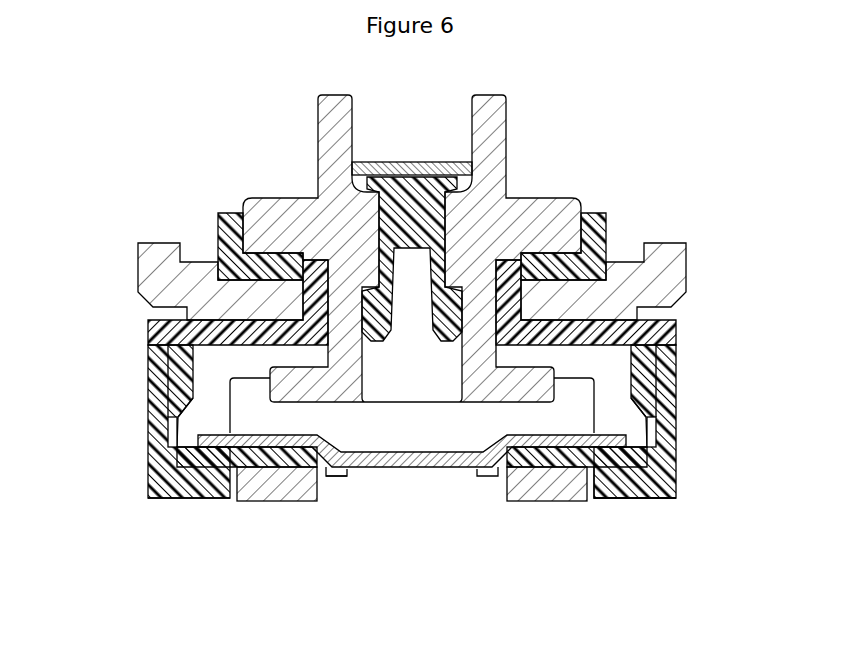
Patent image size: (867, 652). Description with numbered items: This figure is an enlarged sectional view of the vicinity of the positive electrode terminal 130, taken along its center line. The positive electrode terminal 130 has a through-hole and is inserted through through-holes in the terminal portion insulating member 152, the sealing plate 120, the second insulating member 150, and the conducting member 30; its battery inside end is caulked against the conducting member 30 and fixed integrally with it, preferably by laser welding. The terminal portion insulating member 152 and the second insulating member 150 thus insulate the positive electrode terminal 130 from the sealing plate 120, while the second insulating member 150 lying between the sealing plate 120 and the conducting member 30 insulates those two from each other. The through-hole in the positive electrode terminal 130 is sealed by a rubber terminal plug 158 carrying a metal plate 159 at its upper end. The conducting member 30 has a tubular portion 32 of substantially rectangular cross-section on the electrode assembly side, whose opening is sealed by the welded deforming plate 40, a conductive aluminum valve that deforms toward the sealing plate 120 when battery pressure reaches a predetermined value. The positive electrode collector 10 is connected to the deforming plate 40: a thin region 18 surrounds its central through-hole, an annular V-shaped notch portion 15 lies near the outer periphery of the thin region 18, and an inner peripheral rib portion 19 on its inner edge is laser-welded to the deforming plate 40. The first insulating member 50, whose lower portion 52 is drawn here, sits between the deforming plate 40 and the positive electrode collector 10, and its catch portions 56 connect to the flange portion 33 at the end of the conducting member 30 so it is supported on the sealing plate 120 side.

The positive electrode collector 10 is at (277, 490).
The notch portion 15 is at (324, 480).
The thin region 18 is at (343, 478).
The inner peripheral rib portion 19 is at (476, 478).
The conducting member 30 is at (217, 400).
The tubular portion 32 is at (222, 420).
The flange portion 33 is at (177, 450).
The deforming plate 40 is at (595, 490).
The first insulating member 50 is at (148, 378).
The housing bottom wall 52 is at (167, 487).
The catch portions 56 is at (170, 410).
The sealing plate 120 is at (158, 253).
The positive electrode terminal 130 is at (277, 212).
The second insulating member 150 is at (148, 323).
The terminal portion insulating member 152 is at (230, 212).
The rubber terminal plug 158 is at (393, 190).
The metal plate 159 is at (436, 160).